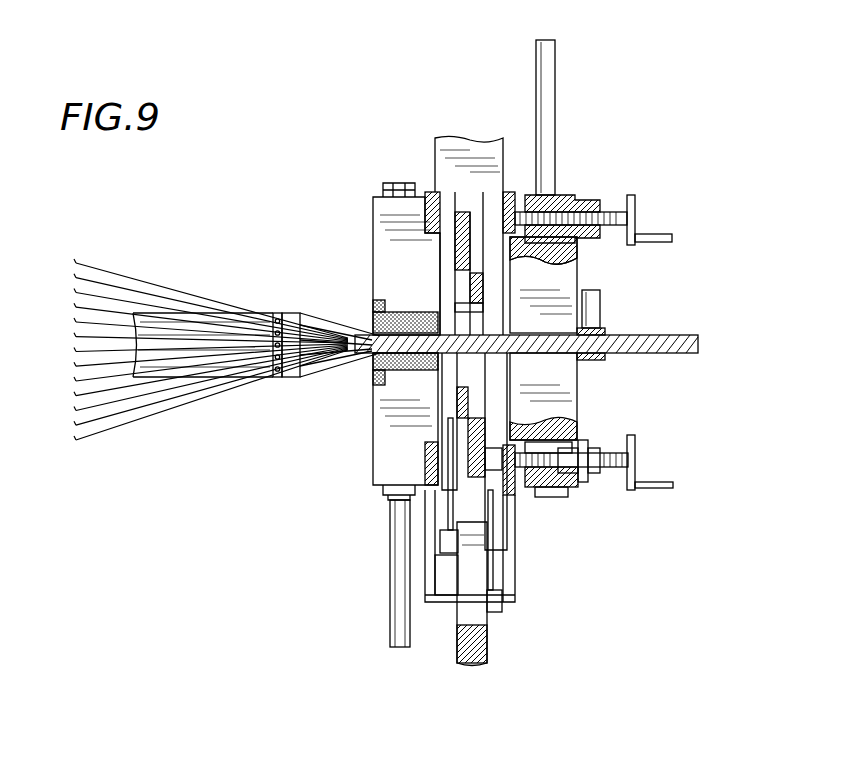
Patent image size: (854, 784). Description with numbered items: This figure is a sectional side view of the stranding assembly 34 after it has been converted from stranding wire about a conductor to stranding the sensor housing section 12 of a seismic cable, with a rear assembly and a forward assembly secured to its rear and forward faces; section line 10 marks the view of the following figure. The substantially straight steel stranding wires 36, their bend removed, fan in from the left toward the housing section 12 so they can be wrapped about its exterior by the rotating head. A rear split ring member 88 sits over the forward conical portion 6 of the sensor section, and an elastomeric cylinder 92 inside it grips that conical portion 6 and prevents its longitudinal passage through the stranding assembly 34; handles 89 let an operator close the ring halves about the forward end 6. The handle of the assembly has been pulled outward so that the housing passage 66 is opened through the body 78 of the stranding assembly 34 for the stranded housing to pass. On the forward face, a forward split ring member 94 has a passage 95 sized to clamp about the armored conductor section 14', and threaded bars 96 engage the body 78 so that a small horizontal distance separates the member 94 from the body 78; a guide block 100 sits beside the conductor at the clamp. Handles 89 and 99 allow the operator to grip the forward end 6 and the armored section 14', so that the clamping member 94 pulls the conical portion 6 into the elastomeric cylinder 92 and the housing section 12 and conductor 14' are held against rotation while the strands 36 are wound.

The forward conical portion 6 is at (330, 367).
The section line 10 is at (369, 38).
The housing section 12 is at (206, 430).
The armored conductor section 14' is at (548, 322).
The stranding assembly 34 is at (472, 108).
The stranding wires 36 is at (120, 277).
The housing passage 66 is at (480, 318).
The body 78 is at (493, 200).
The rear split ring member 88 is at (363, 229).
The handles 89 is at (395, 558).
The elastomeric cylinder 92 is at (372, 318).
The forward split ring member 94 is at (555, 395).
The passage 95 is at (548, 355).
The threaded bars 96 is at (606, 207).
The handles 99 is at (550, 103).
The guide block 100 is at (613, 311).